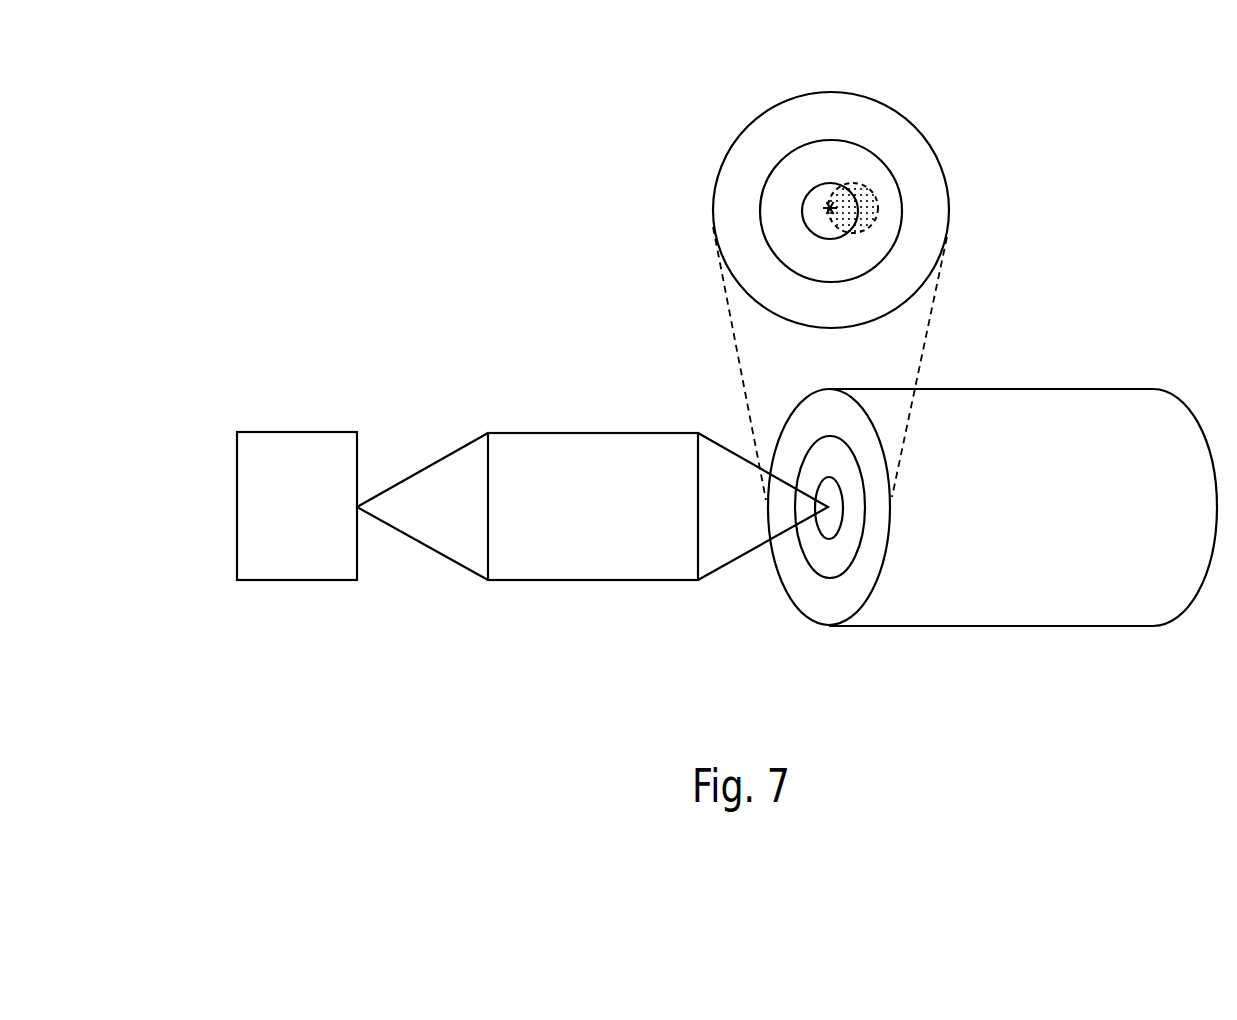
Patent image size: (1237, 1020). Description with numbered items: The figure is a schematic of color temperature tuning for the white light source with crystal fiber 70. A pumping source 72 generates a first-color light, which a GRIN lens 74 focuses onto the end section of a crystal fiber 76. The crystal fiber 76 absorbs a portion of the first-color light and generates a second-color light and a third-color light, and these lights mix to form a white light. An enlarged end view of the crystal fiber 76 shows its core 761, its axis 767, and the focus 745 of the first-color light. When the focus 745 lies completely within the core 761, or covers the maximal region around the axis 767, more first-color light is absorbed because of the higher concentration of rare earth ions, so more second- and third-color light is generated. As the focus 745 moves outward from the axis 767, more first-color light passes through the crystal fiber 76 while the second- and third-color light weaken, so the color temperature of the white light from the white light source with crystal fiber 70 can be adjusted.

The white light source with crystal fiber 70 is at (372, 201).
The pumping source 72 is at (270, 432).
The GRIN lens 74 is at (533, 432).
The crystal fiber 76 is at (1048, 388).
The core 761 is at (813, 210).
The axis 767 is at (831, 206).
The focus 745 is at (875, 197).